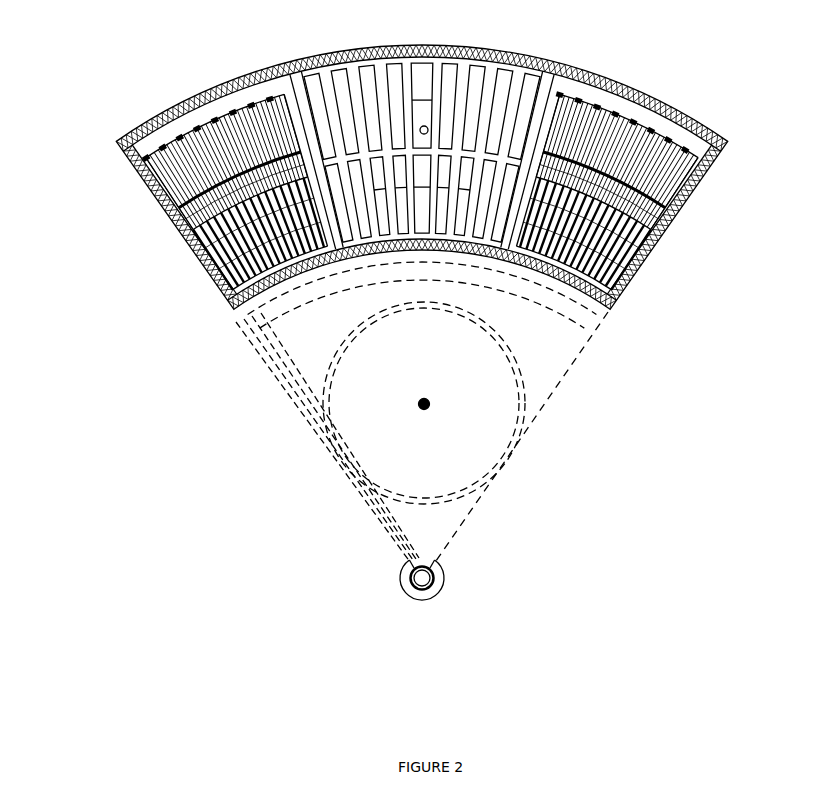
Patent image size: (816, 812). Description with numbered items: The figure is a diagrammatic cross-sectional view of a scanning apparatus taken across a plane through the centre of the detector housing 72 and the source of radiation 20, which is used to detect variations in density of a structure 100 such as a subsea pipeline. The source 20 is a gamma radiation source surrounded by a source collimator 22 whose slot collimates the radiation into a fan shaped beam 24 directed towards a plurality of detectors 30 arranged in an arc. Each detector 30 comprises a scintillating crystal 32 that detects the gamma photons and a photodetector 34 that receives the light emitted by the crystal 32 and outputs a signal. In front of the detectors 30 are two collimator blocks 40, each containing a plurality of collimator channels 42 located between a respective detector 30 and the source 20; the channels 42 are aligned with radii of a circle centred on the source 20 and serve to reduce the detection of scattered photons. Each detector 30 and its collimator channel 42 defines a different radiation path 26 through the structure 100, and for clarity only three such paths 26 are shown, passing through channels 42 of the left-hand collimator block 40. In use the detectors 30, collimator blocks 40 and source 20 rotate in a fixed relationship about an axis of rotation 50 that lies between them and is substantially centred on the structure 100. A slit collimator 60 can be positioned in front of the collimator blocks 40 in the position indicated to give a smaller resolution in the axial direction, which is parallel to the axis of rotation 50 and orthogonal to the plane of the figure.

The source of radiation 20 is at (413, 588).
The source collimator 22 is at (432, 597).
The fan shaped beam 24 is at (517, 457).
The radiation paths 26 is at (310, 399).
The detectors 30 is at (85, 249).
The scintillating crystal 32 is at (182, 221).
The photodetectors 34 is at (172, 200).
The collimator block 40 is at (190, 303).
The collimator channels 42 is at (202, 262).
The axis of rotation 50 is at (424, 404).
The slit collimator 60 is at (263, 316).
The detector housing 72 is at (413, 52).
The structure 100 is at (315, 432).